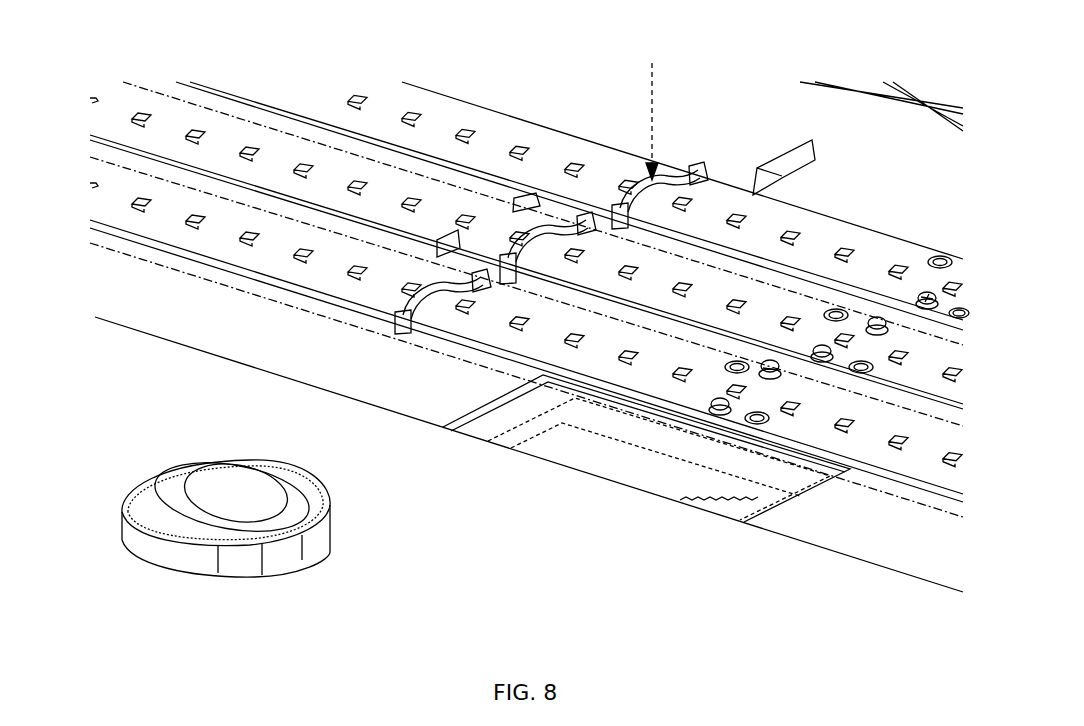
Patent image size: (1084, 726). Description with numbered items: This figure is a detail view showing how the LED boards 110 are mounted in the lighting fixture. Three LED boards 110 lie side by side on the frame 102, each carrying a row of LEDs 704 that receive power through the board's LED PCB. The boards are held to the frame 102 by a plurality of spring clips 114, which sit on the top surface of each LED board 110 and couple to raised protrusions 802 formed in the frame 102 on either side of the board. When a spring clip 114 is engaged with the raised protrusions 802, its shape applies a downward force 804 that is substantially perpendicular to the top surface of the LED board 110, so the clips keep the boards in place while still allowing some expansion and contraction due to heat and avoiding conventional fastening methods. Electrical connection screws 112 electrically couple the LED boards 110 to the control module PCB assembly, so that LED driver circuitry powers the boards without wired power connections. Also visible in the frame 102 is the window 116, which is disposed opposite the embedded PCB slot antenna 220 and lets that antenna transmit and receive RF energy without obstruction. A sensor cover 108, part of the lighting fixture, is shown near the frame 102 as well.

The frame 102 is at (218, 328).
The sensor cover 108 is at (223, 502).
The LED board 110 is at (415, 92).
The electrical connection screw 112 is at (925, 293).
The spring clip 114 is at (694, 165).
The window 116 is at (470, 425).
The embedded PCB slot antenna 220 is at (550, 450).
The LED 704 is at (522, 146).
The raised protrusion 802 is at (412, 335).
The downward force 804 is at (652, 102).